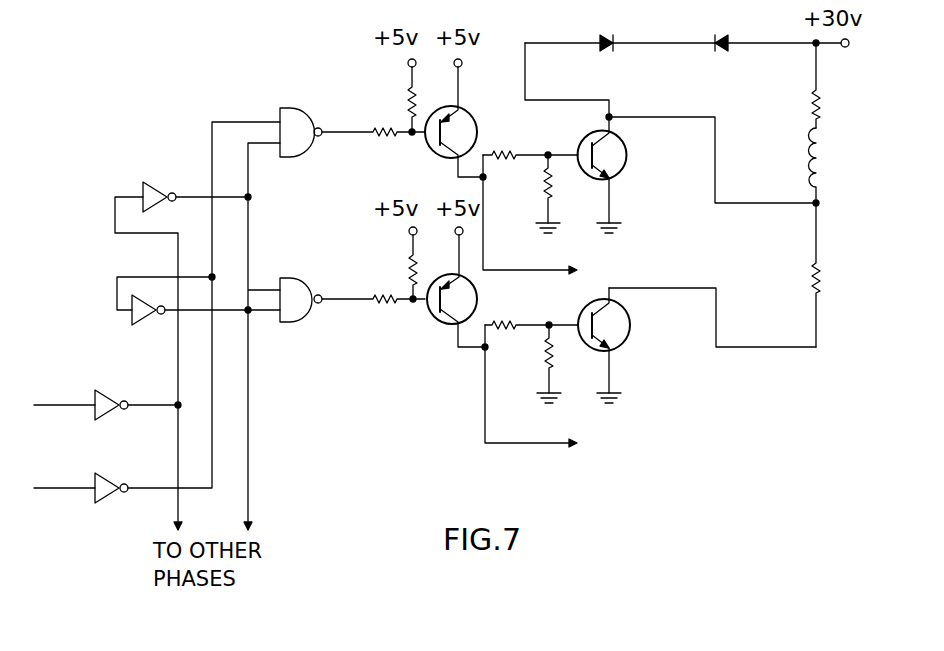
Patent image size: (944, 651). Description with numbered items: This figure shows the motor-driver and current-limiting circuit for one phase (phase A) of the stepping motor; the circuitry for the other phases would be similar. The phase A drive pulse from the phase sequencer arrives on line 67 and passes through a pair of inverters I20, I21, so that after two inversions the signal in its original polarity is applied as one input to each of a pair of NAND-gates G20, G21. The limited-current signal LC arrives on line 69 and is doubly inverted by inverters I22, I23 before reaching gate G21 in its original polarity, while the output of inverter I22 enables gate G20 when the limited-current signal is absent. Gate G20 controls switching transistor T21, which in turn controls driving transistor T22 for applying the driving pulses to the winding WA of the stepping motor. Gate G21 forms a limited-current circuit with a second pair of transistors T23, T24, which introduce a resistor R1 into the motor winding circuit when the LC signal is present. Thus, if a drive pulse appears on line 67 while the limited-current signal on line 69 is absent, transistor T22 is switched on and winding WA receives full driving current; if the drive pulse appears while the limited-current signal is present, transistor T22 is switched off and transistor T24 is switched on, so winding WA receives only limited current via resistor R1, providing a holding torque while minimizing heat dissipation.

The line 67 is at (52, 403).
The line 69 is at (52, 487).
The inverter I20 is at (134, 385).
The inverter I21 is at (181, 336).
The inverter I22 is at (185, 312).
The inverter I23 is at (198, 301).
The NAND-gate G20 is at (348, 113).
The NAND-gate G21 is at (349, 281).
The switching transistor T21 is at (471, 122).
The driving transistor T22 is at (625, 170).
The transistor T23 is at (450, 294).
The transistor T24 is at (625, 340).
The winding WA is at (796, 123).
The resistor R1 is at (802, 275).